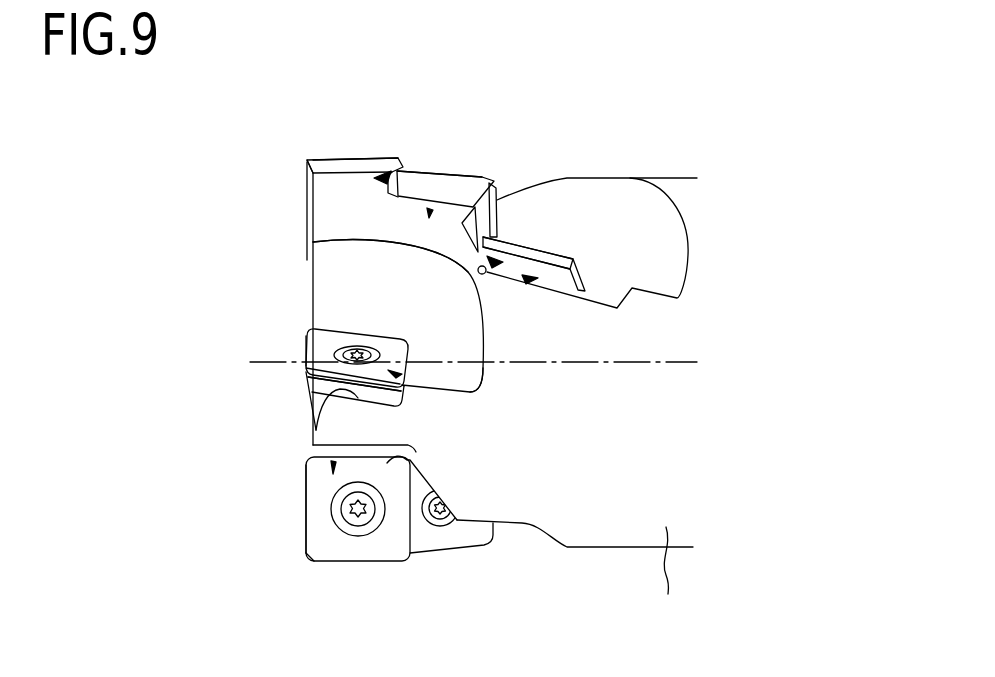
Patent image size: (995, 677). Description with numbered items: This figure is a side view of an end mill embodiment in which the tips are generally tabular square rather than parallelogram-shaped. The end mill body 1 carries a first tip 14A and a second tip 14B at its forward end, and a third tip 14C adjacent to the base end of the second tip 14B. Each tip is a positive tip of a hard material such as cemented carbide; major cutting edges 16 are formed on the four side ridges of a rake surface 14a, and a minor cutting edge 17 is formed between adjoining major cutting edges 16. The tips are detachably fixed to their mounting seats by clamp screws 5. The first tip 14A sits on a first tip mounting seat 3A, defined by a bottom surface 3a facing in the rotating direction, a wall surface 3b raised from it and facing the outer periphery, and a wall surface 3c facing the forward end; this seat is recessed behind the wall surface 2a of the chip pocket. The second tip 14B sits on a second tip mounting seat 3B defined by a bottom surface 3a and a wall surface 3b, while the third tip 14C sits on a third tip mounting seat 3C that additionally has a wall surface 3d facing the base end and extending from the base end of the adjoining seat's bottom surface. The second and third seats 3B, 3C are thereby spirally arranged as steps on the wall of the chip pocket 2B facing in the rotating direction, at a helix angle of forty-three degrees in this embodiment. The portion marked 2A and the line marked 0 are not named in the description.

The axis of rotation 0 is at (678, 362).
The end mill body 1 is at (684, 622).
The first body portion 2A is at (338, 275).
The chip pocket 2B is at (588, 203).
The wall surface of the chip pocket 2a is at (483, 375).
The first tip mounting seat 3A is at (412, 405).
The second tip mounting seat 3B is at (360, 181).
The third tip mounting seat 3C is at (427, 213).
The bottom surface 3a is at (313, 428).
The wall surface 3b is at (365, 358).
The wall surface 3c is at (443, 375).
The wall surface 3d is at (499, 252).
The clamp screw 5 is at (352, 347).
The first tip 14A is at (288, 340).
The second tip 14B is at (368, 157).
The third tip 14C is at (548, 222).
The rake surface 14a is at (393, 340).
The major cutting edge 16 is at (332, 157).
The minor cutting edge 17 is at (307, 166).